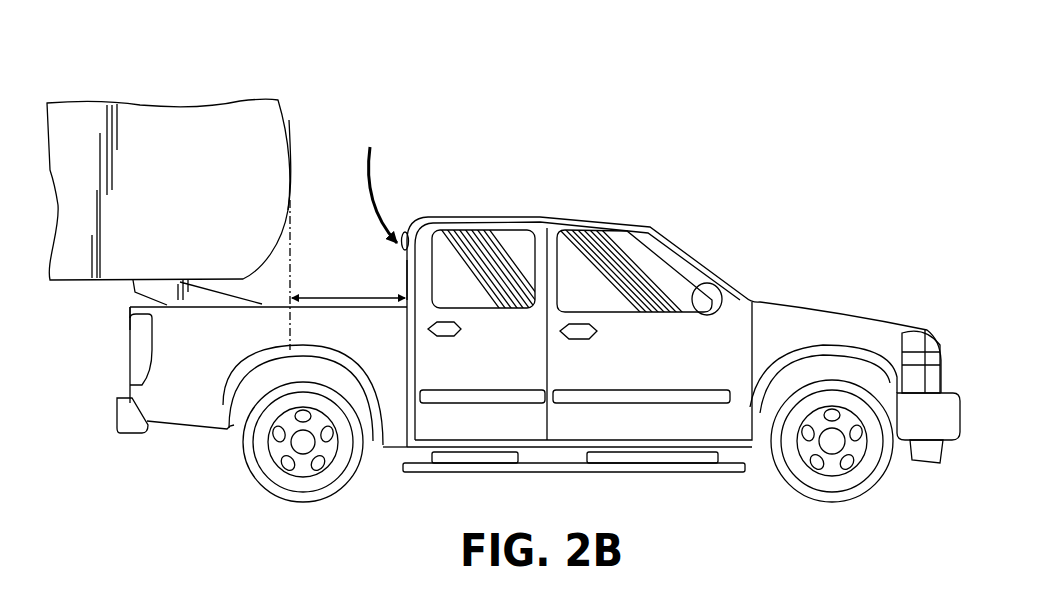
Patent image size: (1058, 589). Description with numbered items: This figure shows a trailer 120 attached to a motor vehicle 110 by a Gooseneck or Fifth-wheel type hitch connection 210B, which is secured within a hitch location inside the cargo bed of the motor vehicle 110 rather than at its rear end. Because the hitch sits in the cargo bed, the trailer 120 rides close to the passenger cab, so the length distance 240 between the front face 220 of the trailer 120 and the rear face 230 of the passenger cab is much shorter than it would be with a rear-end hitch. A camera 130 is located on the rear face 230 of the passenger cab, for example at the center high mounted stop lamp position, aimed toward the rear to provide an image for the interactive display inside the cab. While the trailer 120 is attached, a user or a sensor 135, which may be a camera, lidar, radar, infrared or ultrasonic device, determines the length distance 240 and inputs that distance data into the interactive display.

The motor vehicle 110 is at (587, 186).
The trailer 120 is at (159, 77).
The front face of the trailer 220 is at (293, 127).
The camera 130 is at (404, 230).
The sensor 135 is at (377, 184).
The rear face of the passenger cab 230 is at (387, 258).
The length distance 240 is at (332, 297).
The hitch connection 210B is at (130, 300).